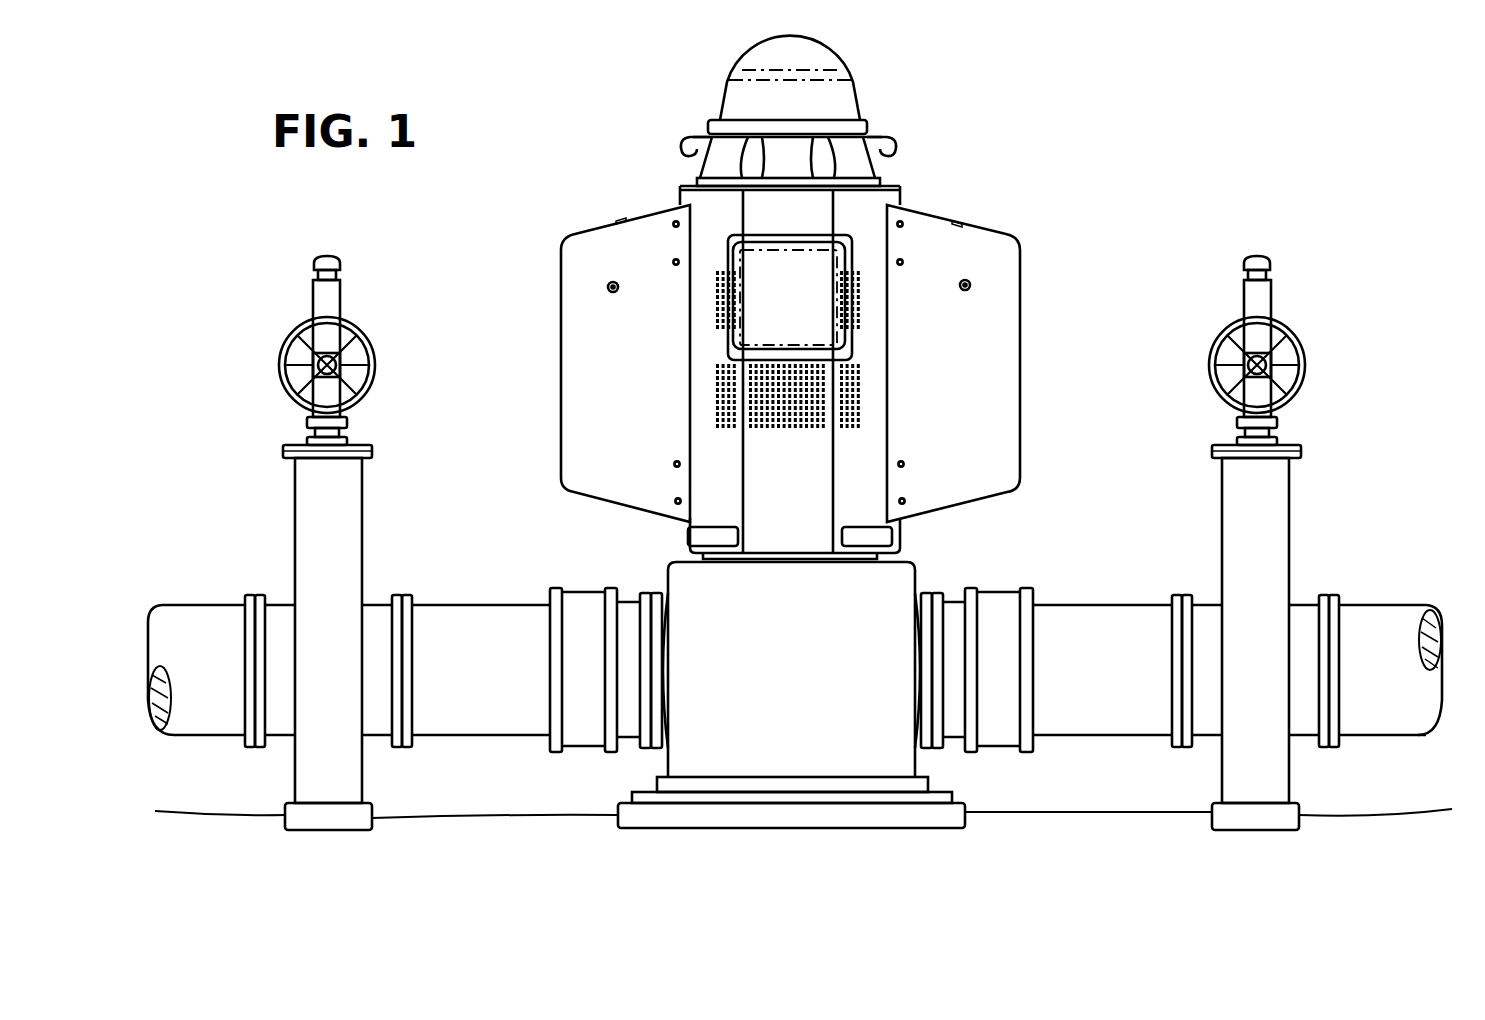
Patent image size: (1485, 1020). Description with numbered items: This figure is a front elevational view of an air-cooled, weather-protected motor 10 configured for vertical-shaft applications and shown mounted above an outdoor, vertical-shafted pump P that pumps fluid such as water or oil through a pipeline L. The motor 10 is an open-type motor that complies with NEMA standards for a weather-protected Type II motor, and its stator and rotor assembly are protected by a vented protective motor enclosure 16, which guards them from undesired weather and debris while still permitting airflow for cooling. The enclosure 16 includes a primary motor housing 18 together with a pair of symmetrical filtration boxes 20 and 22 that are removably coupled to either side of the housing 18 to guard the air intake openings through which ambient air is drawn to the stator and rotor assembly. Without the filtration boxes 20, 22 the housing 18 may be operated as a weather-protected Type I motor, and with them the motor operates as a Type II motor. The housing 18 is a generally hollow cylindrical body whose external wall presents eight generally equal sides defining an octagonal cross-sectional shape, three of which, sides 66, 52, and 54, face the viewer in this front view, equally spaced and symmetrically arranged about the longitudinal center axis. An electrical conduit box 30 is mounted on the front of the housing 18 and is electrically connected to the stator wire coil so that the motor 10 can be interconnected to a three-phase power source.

The weather-protected motor 10 is at (602, 152).
The motor enclosure 16 is at (930, 186).
The primary motor housing 18 is at (878, 191).
The filtration box 20 is at (581, 344).
The filtration box 22 is at (1000, 342).
The electrical conduit box 30 is at (802, 311).
The side 52 is at (802, 504).
The side 54 is at (872, 504).
The side 66 is at (733, 504).
The pump P is at (898, 584).
The pipeline L is at (1098, 621).